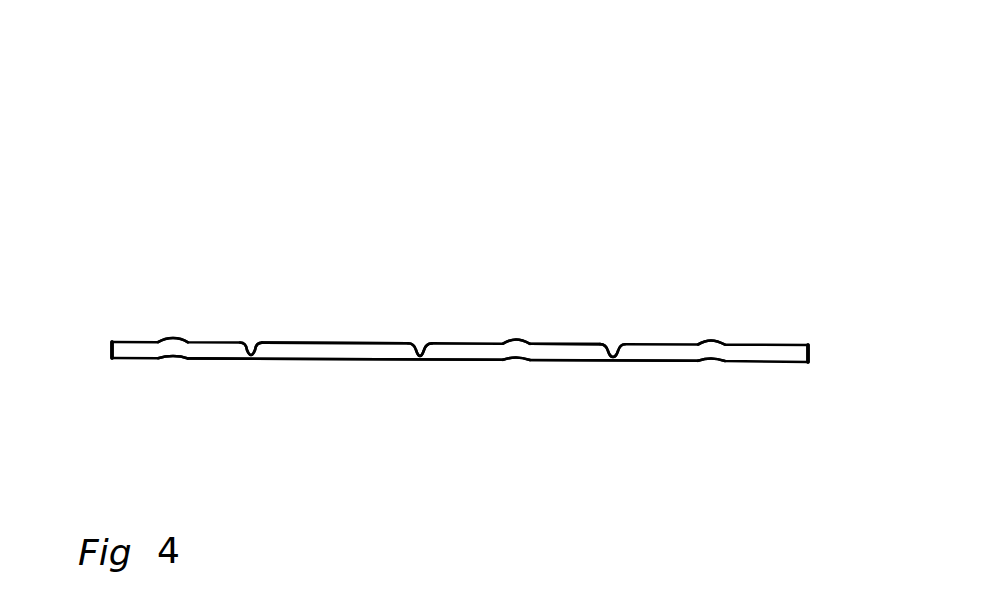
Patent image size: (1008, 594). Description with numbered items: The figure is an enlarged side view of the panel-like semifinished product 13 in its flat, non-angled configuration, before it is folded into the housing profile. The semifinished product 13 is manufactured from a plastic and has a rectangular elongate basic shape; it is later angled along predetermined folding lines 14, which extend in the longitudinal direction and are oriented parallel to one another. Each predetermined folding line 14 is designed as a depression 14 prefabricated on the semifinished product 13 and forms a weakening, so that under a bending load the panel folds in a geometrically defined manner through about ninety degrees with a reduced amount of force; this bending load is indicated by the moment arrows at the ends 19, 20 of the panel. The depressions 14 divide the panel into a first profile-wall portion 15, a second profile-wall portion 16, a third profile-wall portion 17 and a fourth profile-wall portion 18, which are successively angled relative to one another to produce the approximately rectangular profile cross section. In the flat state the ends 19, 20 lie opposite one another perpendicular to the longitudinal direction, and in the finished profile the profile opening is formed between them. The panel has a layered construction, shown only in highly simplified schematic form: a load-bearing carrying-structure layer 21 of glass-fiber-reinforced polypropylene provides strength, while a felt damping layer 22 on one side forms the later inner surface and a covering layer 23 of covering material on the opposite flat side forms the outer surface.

The panel-like semifinished product 13 is at (449, 134).
The predetermined folding line 14 is at (250, 345).
The first profile-wall portion 15 is at (170, 393).
The second profile-wall portion 16 is at (330, 311).
The third profile-wall portion 17 is at (513, 396).
The fourth profile-wall portion 18 is at (737, 316).
The end of the semifinished product 19 is at (78, 313).
The end of the semifinished product 20 is at (872, 387).
The carrying-structure layer 21 is at (363, 347).
The damping layer 22 is at (563, 334).
The covering layer 23 is at (606, 371).